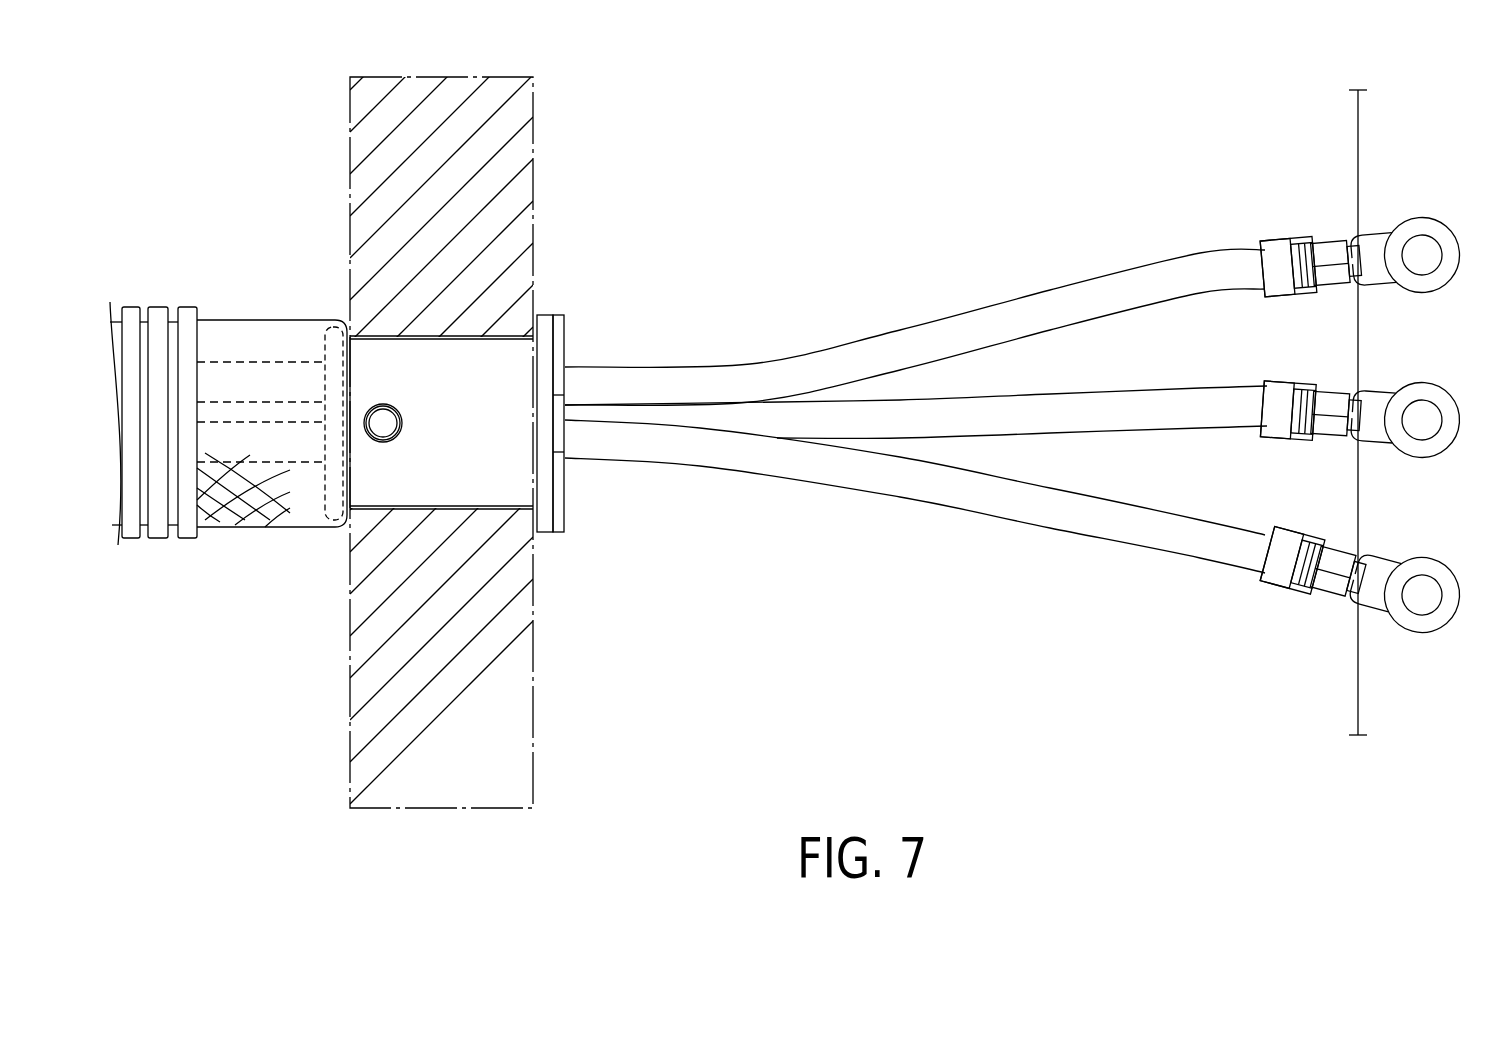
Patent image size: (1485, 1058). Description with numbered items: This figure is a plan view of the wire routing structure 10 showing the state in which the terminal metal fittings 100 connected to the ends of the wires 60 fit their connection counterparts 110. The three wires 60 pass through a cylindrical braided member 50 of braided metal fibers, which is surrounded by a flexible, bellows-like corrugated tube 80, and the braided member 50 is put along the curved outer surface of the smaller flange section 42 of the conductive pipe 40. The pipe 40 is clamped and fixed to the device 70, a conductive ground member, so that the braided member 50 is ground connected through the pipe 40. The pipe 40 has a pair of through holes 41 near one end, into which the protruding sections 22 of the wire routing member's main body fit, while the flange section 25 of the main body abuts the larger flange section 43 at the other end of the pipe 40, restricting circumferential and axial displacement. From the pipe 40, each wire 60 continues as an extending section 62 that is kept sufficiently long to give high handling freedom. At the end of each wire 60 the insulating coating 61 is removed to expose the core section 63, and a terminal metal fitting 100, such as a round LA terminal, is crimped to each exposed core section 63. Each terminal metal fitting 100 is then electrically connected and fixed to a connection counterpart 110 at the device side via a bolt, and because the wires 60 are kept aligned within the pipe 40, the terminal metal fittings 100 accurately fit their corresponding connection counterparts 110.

The wire routing structure 10 is at (228, 391).
The protruding section 22 is at (385, 418).
The flange section 25 is at (565, 348).
The pipe 40 is at (485, 342).
The through hole 41 is at (370, 428).
The flange section 42 is at (323, 341).
The flange section 43 is at (540, 318).
The braided member 50 is at (228, 513).
The wire 60 is at (262, 420).
The coating 61 is at (685, 383).
The extending section 62 is at (750, 382).
The core section 63 is at (1373, 253).
The device 70 is at (527, 185).
The corrugated tube 80 is at (160, 535).
The terminal metal fitting 100 is at (1418, 225).
The connection counterpart 110 is at (1358, 684).